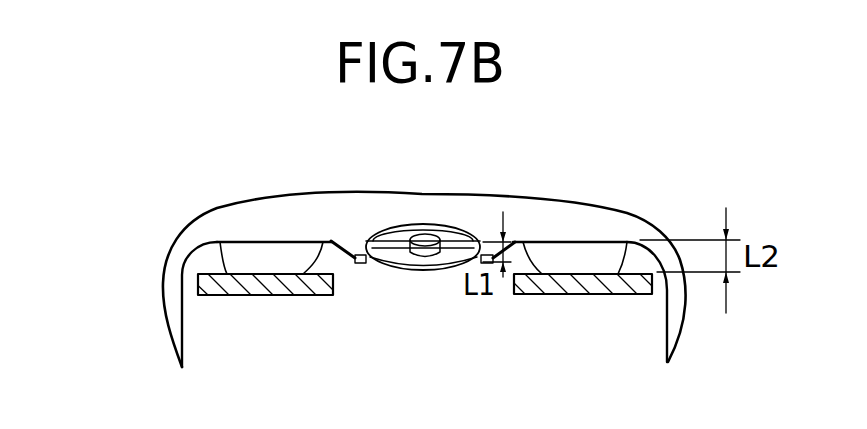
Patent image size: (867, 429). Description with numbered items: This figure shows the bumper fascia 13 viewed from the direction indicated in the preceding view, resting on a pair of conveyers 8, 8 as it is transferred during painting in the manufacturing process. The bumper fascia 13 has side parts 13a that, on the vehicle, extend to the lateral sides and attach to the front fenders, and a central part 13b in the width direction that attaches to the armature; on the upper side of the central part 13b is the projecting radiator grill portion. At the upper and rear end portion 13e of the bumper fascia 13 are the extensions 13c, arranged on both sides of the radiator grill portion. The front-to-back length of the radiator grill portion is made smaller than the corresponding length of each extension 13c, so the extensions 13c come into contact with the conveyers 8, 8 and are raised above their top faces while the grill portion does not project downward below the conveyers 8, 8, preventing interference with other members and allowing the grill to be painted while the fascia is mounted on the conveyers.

The bumper fascia 13 is at (513, 198).
The side part 13a is at (168, 338).
The central part 13b is at (422, 204).
The extension 13c is at (267, 257).
The upper and rear end portion 13e is at (346, 241).
The conveyer 8 is at (278, 291).